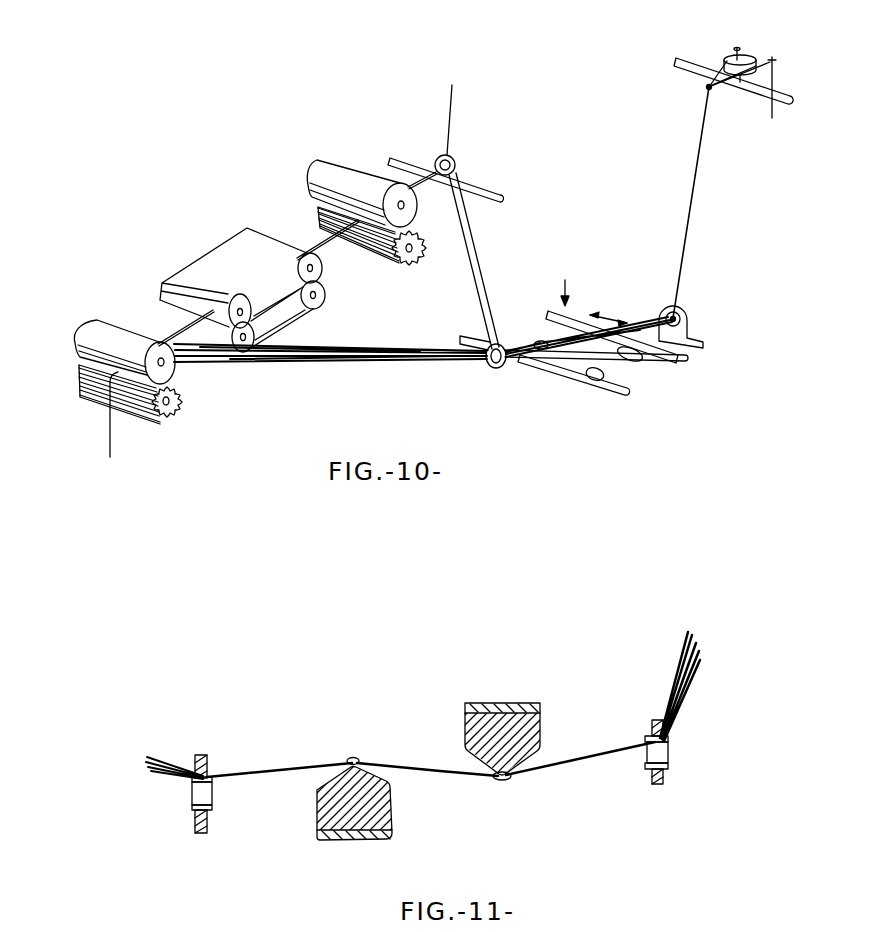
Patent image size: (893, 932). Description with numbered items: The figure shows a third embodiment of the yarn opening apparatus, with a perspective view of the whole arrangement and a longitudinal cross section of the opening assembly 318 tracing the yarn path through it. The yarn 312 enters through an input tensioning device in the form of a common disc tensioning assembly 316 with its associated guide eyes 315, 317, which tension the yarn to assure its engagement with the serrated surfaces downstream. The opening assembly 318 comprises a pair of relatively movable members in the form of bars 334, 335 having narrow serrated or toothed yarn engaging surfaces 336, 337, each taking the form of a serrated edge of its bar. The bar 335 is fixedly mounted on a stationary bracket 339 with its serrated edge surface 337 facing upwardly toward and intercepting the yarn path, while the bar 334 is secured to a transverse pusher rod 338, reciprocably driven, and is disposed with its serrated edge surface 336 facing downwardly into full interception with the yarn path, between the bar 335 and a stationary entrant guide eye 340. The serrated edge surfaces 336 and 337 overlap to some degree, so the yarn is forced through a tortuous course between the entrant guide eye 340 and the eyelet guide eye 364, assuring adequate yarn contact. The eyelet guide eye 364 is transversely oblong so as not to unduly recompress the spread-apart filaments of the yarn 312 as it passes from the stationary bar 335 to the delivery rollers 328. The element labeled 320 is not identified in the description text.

In FIG. 10, the yarn 312 is at (700, 161).
In FIG. 11, the yarn 312 is at (437, 770).
In FIG. 10, the guide eye 315 is at (772, 60).
In FIG. 10, the disc tensioning assembly 316 is at (731, 53).
In FIG. 10, the guide eye 317 is at (706, 88).
In FIG. 10, the opening assembly 318 is at (574, 279).
In FIG. 10, the pivot arm 320 is at (452, 106).
In FIG. 10, the delivery rollers 328 is at (180, 381).
In FIG. 10, the bar 334 is at (583, 327).
In FIG. 11, the bar 334 is at (533, 723).
In FIG. 10, the bar 335 is at (593, 382).
In FIG. 11, the bar 335 is at (322, 808).
In FIG. 10, the serrated yarn engaging surface 336 is at (640, 362).
In FIG. 11, the serrated yarn engaging surface 336 is at (503, 780).
In FIG. 10, the serrated yarn engaging surface 337 is at (541, 340).
In FIG. 11, the serrated yarn engaging surface 337 is at (352, 757).
In FIG. 10, the transverse pusher rod 338 is at (688, 357).
In FIG. 10, the stationary bracket 339 is at (470, 336).
In FIG. 10, the entrant guide eye 340 is at (688, 312).
In FIG. 11, the entrant guide eye 340 is at (670, 763).
In FIG. 10, the eyelet guide eye 364 is at (498, 368).
In FIG. 11, the eyelet guide eye 364 is at (206, 776).